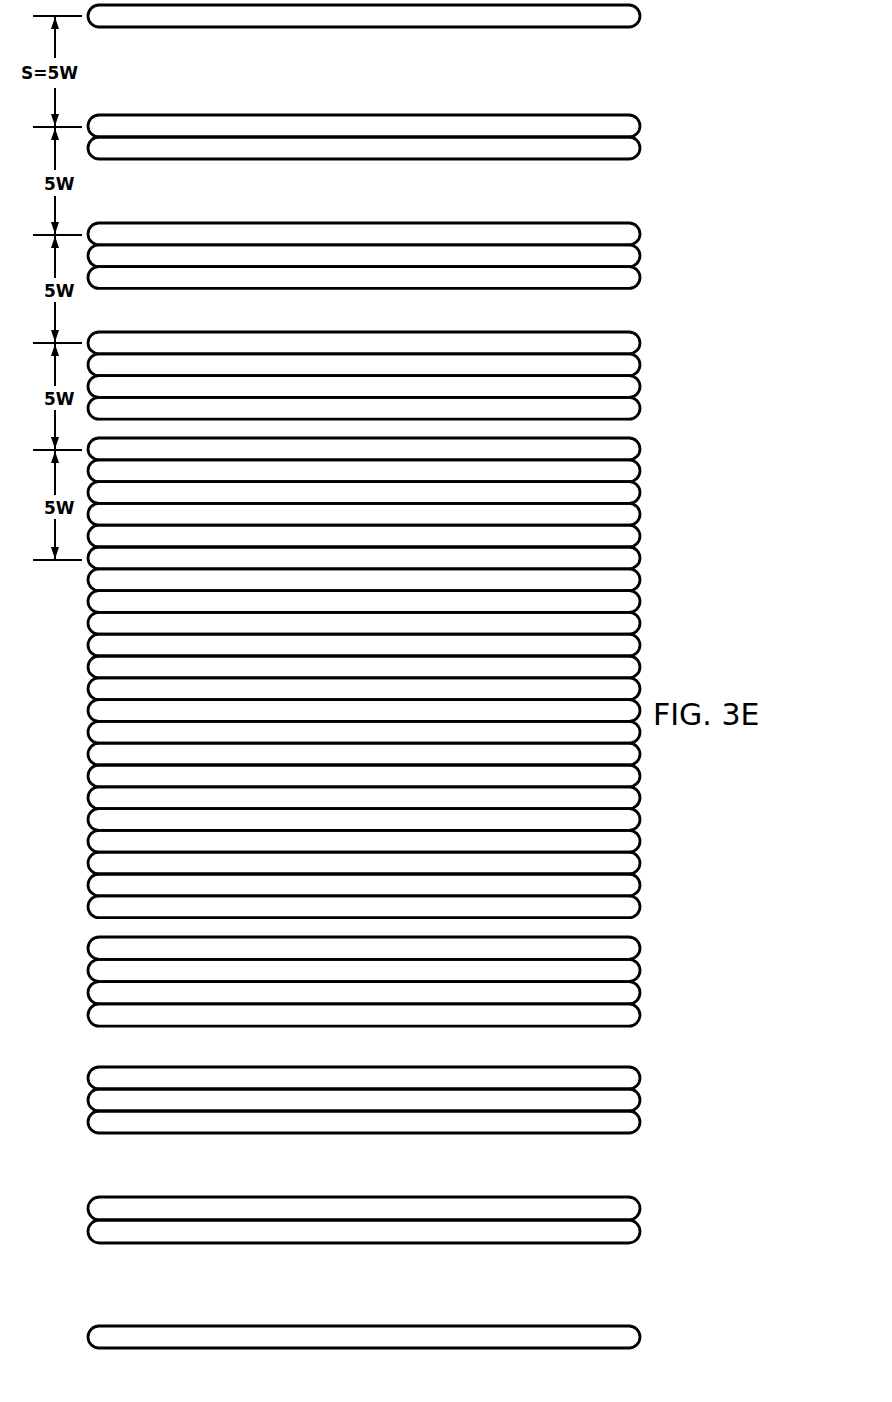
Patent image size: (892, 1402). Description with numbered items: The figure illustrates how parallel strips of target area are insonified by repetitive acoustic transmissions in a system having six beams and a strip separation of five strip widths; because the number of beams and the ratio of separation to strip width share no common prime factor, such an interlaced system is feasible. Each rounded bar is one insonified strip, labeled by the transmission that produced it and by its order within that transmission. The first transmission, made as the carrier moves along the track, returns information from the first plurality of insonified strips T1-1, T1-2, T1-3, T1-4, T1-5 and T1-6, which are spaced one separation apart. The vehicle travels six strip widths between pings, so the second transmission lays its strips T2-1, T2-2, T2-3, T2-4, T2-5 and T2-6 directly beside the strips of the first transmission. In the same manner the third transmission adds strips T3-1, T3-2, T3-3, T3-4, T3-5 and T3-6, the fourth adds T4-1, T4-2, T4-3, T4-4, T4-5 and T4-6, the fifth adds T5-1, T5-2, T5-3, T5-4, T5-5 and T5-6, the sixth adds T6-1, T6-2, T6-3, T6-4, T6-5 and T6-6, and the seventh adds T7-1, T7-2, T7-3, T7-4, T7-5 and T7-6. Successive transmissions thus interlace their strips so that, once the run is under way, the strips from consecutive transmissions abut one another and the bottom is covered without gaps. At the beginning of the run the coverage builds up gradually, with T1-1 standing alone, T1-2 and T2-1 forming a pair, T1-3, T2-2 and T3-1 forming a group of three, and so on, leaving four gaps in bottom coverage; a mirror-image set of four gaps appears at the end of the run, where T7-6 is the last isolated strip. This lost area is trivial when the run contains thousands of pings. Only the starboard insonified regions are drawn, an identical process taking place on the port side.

The insonified strip T1-1 is at (364, 16).
The insonified strip T1-2 is at (364, 126).
The insonified strip T1-3 is at (364, 234).
The insonified strip T1-4 is at (364, 343).
The insonified strip T1-5 is at (364, 449).
The insonified strip T1-6 is at (364, 558).
The insonified strip T2-1 is at (364, 148).
The insonified strip T2-2 is at (364, 256).
The insonified strip T2-3 is at (364, 365).
The insonified strip T2-4 is at (364, 471).
The insonified strip T2-5 is at (364, 580).
The insonified strip T2-6 is at (364, 689).
The insonified strip T3-1 is at (364, 278).
The insonified strip T3-2 is at (364, 387).
The insonified strip T3-3 is at (364, 493).
The insonified strip T3-4 is at (364, 602).
The insonified strip T3-5 is at (364, 711).
The insonified strip T3-6 is at (364, 820).
The insonified strip T4-1 is at (364, 408).
The insonified strip T4-2 is at (364, 514).
The insonified strip T4-3 is at (364, 623).
The insonified strip T4-4 is at (364, 732).
The insonified strip T4-5 is at (364, 841).
The insonified strip T4-6 is at (364, 948).
The insonified strip T5-1 is at (364, 536).
The insonified strip T5-2 is at (364, 645).
The insonified strip T5-3 is at (364, 754).
The insonified strip T5-4 is at (364, 863).
The insonified strip T5-5 is at (364, 970).
The insonified strip T5-6 is at (364, 1078).
The insonified strip T6-1 is at (364, 667).
The insonified strip T6-2 is at (364, 776).
The insonified strip T6-3 is at (364, 885).
The insonified strip T6-4 is at (364, 993).
The insonified strip T6-5 is at (364, 1100).
The insonified strip T6-6 is at (364, 1208).
The insonified strip T7-1 is at (364, 798).
The insonified strip T7-2 is at (364, 907).
The insonified strip T7-3 is at (364, 1015).
The insonified strip T7-4 is at (364, 1122).
The insonified strip T7-5 is at (364, 1231).
The insonified strip T7-6 is at (364, 1337).